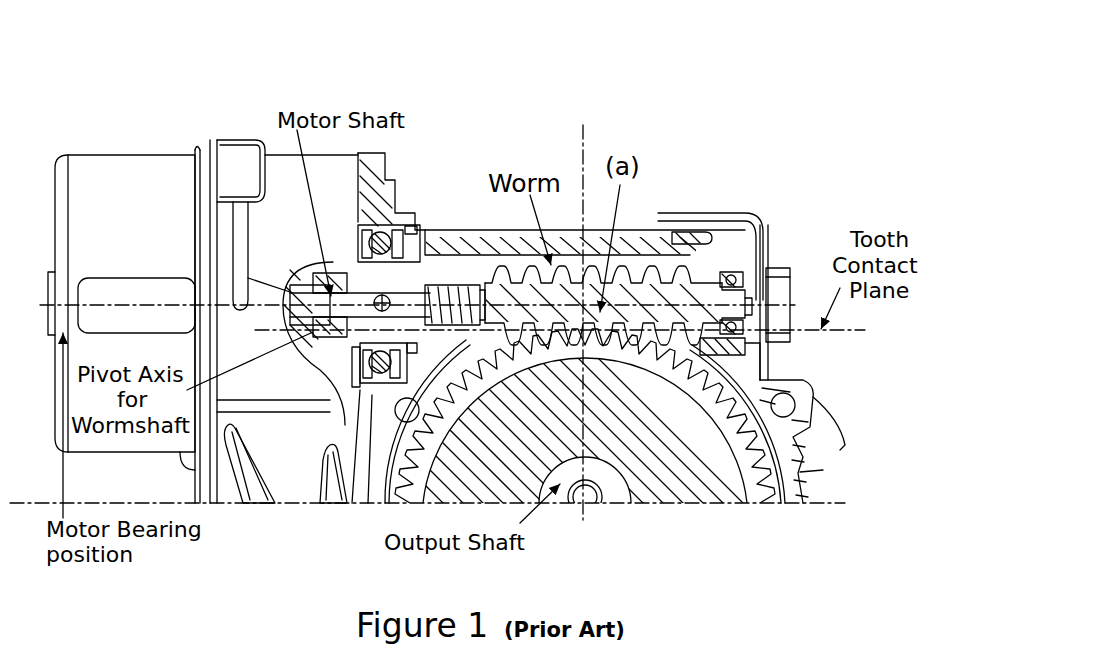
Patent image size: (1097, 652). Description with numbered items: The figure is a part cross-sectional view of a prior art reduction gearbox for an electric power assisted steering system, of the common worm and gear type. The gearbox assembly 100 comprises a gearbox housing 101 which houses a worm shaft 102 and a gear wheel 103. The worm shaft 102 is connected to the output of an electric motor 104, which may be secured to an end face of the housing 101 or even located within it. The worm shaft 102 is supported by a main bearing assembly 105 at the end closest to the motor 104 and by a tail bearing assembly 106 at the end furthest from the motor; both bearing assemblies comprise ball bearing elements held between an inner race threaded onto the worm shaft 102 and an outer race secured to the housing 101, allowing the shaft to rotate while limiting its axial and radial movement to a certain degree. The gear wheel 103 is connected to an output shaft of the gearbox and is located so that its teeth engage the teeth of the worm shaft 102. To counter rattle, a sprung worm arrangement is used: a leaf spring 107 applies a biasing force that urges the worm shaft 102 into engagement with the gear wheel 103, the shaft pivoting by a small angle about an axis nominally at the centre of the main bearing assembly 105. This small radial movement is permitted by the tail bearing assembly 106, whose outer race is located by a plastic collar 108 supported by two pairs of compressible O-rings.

The gearbox assembly 100 is at (578, 108).
The gearbox housing 101 is at (275, 150).
The worm shaft 102 is at (689, 290).
The gear wheel 103 is at (722, 412).
The electric motor 104 is at (115, 200).
The main bearing assembly 105 is at (388, 242).
The tail bearing assembly 106 is at (750, 278).
The leaf spring 107 is at (700, 228).
The plastic collar 108 is at (706, 350).